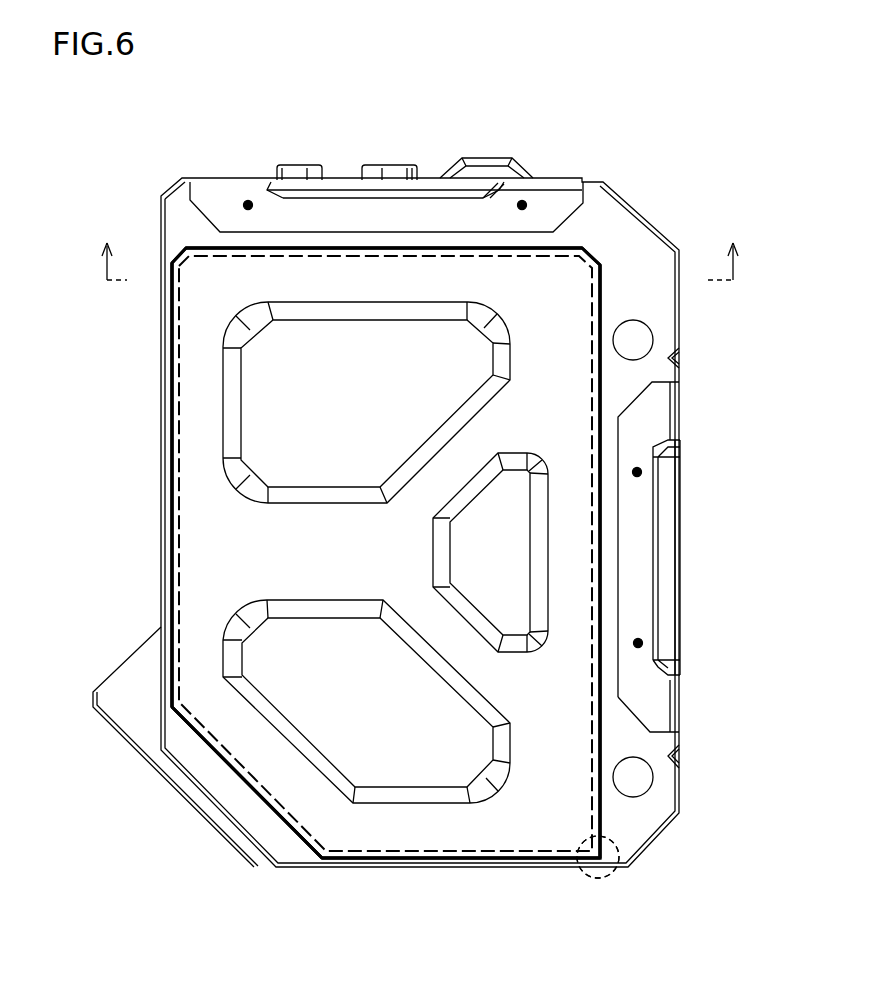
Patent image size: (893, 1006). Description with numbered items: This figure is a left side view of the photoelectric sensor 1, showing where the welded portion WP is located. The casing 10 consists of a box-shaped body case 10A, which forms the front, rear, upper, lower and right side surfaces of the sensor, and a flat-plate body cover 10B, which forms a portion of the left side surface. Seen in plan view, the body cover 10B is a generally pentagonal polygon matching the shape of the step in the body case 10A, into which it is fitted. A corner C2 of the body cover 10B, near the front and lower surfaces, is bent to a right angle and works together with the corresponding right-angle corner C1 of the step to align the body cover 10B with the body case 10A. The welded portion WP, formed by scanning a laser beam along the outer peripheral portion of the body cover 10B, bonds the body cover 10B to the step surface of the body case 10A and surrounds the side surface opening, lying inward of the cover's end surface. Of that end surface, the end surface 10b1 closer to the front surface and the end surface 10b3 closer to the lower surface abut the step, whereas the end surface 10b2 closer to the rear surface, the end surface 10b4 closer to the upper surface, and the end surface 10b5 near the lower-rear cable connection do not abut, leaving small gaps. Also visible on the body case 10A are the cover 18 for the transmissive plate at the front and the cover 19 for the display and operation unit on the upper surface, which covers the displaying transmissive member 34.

The photoelectric sensor 1 is at (682, 122).
The casing 10 is at (163, 176).
The body case 10A is at (640, 300).
The body cover 10B is at (237, 545).
The end surface 10b1 is at (600, 512).
The end surface 10b2 is at (172, 460).
The end surface 10b3 is at (422, 860).
The end surface 10b4 is at (423, 248).
The end surface 10b5 is at (242, 778).
The cover for the transmissive plate 18 is at (637, 590).
The cover for the display and operation unit 19 is at (342, 215).
The displaying transmissive member 34 is at (490, 160).
The welded portion WP is at (178, 365).
The corner of step C1 is at (598, 878).
The corner of body cover C2 is at (598, 857).